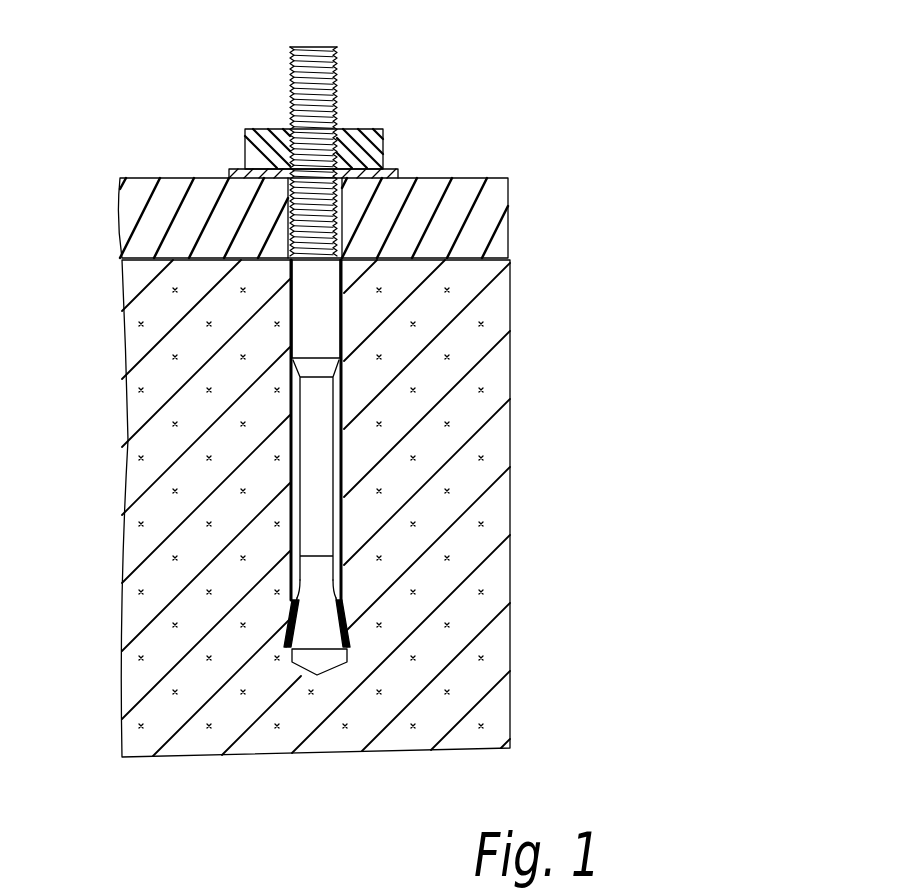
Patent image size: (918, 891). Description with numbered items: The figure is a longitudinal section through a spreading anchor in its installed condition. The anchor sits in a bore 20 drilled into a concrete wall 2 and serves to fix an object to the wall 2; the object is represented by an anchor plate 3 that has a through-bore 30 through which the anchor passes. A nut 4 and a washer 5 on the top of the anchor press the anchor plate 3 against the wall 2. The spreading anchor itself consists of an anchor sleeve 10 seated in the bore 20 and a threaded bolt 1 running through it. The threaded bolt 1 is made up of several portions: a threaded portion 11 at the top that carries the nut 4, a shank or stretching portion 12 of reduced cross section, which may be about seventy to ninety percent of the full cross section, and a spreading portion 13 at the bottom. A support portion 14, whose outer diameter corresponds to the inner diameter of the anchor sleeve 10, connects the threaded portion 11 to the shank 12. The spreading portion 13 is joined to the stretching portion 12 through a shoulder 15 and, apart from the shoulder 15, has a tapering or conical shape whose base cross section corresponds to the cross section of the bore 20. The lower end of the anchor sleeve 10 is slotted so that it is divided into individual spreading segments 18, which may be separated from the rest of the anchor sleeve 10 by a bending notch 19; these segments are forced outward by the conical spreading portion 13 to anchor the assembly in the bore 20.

The threaded bolt 1 is at (320, 324).
The concrete wall 2 is at (162, 319).
The anchor plate 3 is at (405, 231).
The nut 4 is at (393, 127).
The washer 5 is at (412, 166).
The anchor sleeve 10 is at (288, 468).
The threaded portion 11 is at (312, 75).
The shank or stretching portion 12 is at (322, 537).
The spreading portion 13 is at (323, 635).
The support portion 14 is at (325, 338).
The shoulder 15 is at (298, 577).
The spreading segments 18 is at (289, 617).
The bending notch 19 is at (343, 598).
The bore 20 is at (305, 676).
The through-bore 30 is at (289, 225).